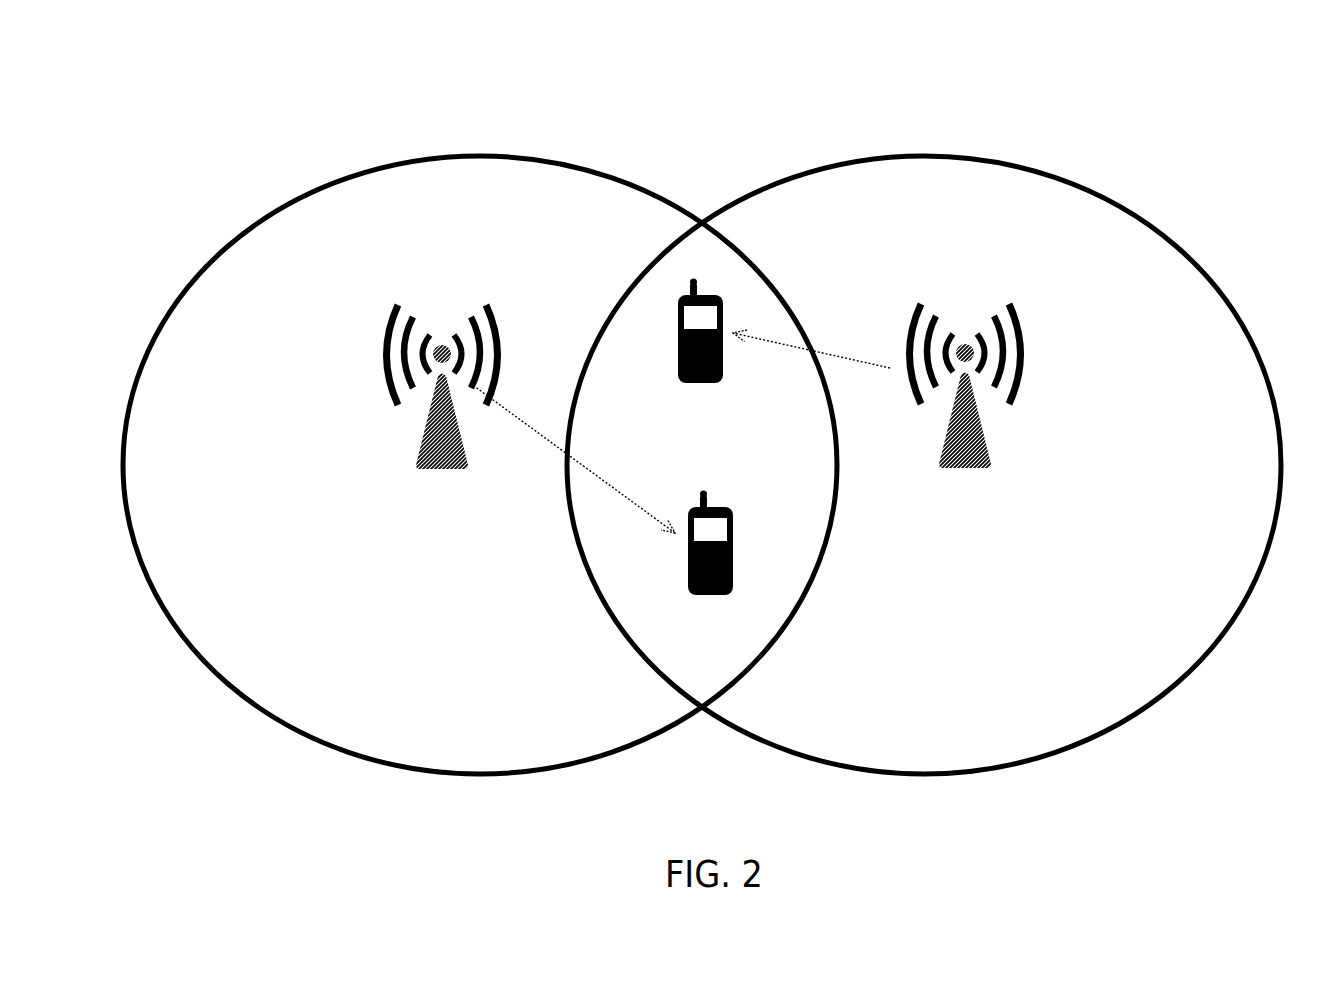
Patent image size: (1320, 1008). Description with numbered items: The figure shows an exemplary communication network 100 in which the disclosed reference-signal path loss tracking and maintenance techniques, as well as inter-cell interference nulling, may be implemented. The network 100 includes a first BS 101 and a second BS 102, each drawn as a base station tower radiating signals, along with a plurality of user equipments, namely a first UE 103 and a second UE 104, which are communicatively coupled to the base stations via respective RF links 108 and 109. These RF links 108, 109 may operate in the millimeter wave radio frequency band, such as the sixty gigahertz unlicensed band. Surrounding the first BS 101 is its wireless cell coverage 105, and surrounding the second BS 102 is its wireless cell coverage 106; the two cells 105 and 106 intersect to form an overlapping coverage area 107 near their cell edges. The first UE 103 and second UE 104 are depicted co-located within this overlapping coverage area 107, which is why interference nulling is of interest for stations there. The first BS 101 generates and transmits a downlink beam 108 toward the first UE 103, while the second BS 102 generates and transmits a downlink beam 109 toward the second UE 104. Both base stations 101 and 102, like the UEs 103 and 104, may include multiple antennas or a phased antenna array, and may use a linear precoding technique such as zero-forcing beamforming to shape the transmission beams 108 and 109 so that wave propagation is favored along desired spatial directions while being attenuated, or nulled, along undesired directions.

The communication network 100 is at (170, 62).
The first BS 101 is at (418, 443).
The second BS 102 is at (988, 431).
The first UE 103 is at (735, 550).
The second UE 104 is at (723, 299).
The wireless cell coverage 105 is at (445, 213).
The wireless cell coverage 106 is at (960, 200).
The overlapping coverage area 107 is at (705, 248).
The RF link 108 is at (517, 422).
The RF link 109 is at (807, 345).